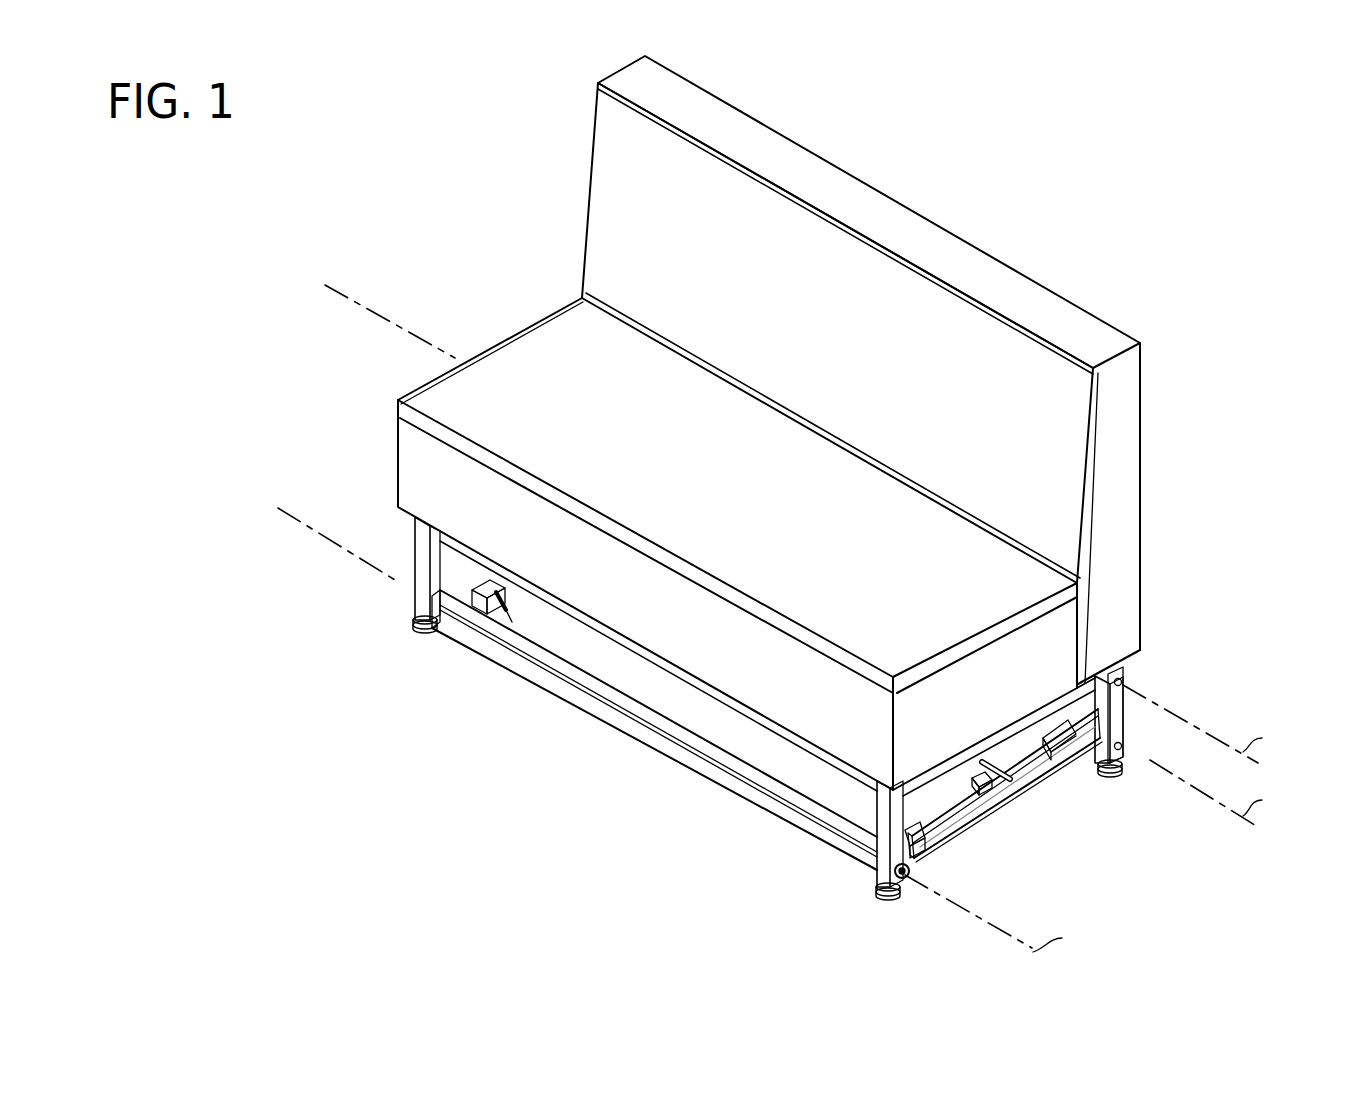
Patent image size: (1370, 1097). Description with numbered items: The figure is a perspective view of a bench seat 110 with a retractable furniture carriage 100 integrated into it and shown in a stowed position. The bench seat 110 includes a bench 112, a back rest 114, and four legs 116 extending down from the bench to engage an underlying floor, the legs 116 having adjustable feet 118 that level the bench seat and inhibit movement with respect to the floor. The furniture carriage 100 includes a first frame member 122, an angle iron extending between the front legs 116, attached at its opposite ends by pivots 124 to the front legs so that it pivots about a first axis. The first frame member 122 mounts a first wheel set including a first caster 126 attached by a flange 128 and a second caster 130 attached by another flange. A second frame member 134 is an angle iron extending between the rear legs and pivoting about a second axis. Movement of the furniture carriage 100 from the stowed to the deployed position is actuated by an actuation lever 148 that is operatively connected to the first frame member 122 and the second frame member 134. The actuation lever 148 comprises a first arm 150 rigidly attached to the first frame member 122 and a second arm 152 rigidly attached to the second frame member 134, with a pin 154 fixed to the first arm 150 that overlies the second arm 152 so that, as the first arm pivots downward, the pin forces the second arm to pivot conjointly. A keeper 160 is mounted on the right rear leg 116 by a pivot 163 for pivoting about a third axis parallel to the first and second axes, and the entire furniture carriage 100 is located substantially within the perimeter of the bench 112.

The furniture carriage 100 is at (645, 776).
The bench seat 110 is at (1100, 248).
The bench 112 is at (553, 357).
The back rest 114 is at (840, 262).
The legs 116 is at (418, 540).
The feet 118 is at (408, 627).
The first frame member 122 is at (588, 700).
The pivots 124 is at (903, 880).
The first caster 126 is at (512, 622).
The flange 128 is at (472, 603).
The second caster 130 is at (922, 870).
The second frame member 134 is at (1058, 722).
The actuation lever 148 is at (1020, 822).
The first arm 150 is at (953, 818).
The second arm 152 is at (1013, 764).
The pin 154 is at (950, 826).
The keeper 160 is at (1135, 706).
The pivot 163 is at (1125, 681).